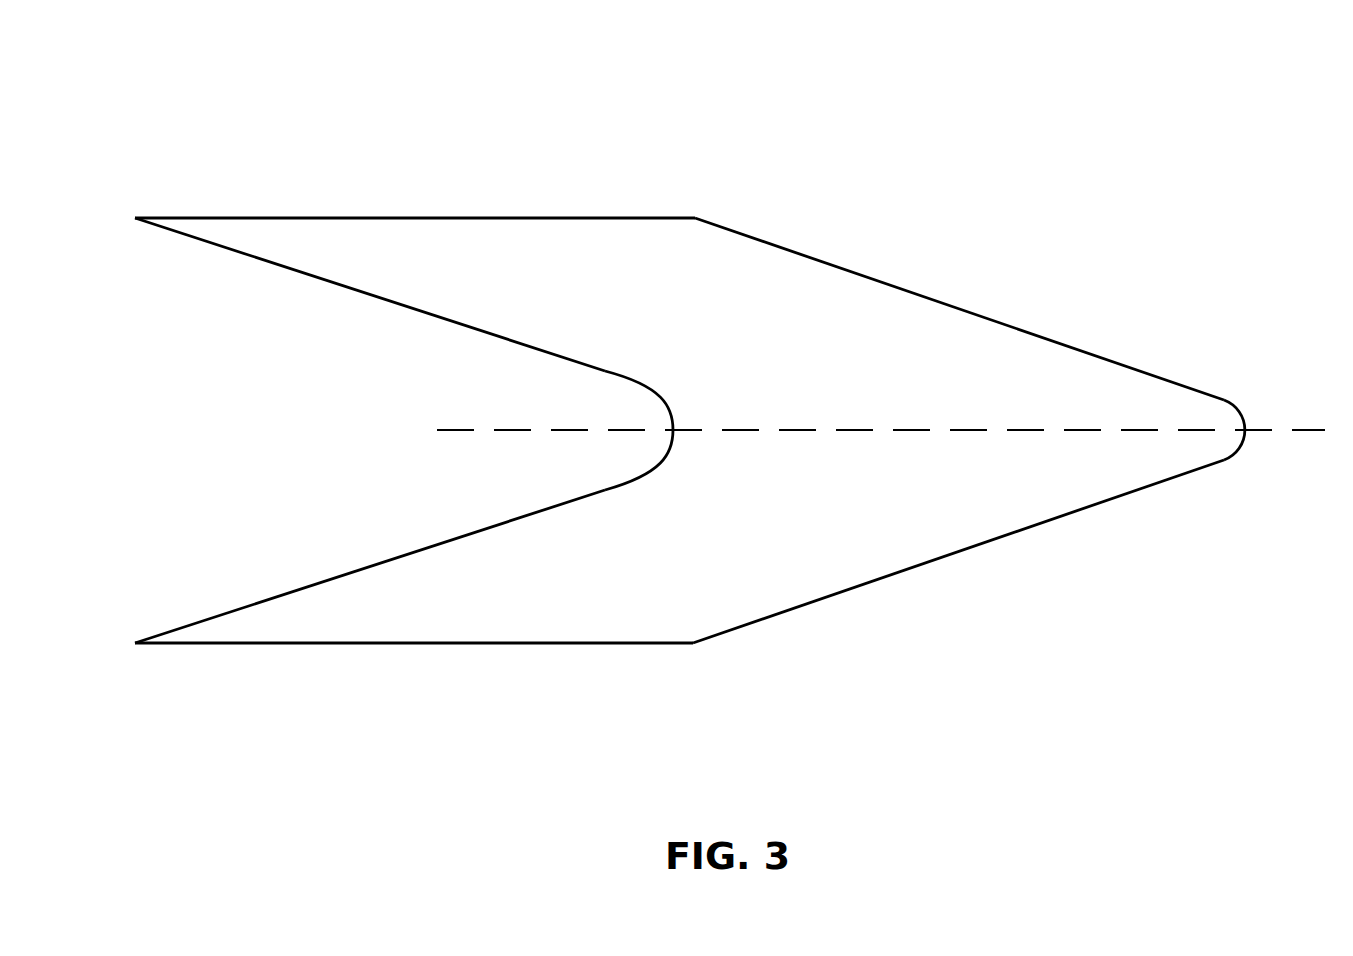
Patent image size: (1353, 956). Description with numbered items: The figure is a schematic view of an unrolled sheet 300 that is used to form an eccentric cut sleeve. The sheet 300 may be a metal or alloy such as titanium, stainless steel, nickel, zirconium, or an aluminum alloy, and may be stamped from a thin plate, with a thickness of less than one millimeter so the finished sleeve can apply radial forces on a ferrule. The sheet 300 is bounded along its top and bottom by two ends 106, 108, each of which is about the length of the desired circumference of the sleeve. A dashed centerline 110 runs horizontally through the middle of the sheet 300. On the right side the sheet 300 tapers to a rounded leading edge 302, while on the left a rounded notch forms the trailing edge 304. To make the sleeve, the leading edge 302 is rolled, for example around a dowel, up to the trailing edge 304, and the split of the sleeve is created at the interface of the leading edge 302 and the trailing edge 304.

The unrolled sheet 300 is at (730, 393).
The end 106 is at (500, 218).
The end 108 is at (532, 644).
The centerline axis 110 is at (858, 432).
The leading edge 302 is at (1238, 408).
The trailing edge 304 is at (668, 413).